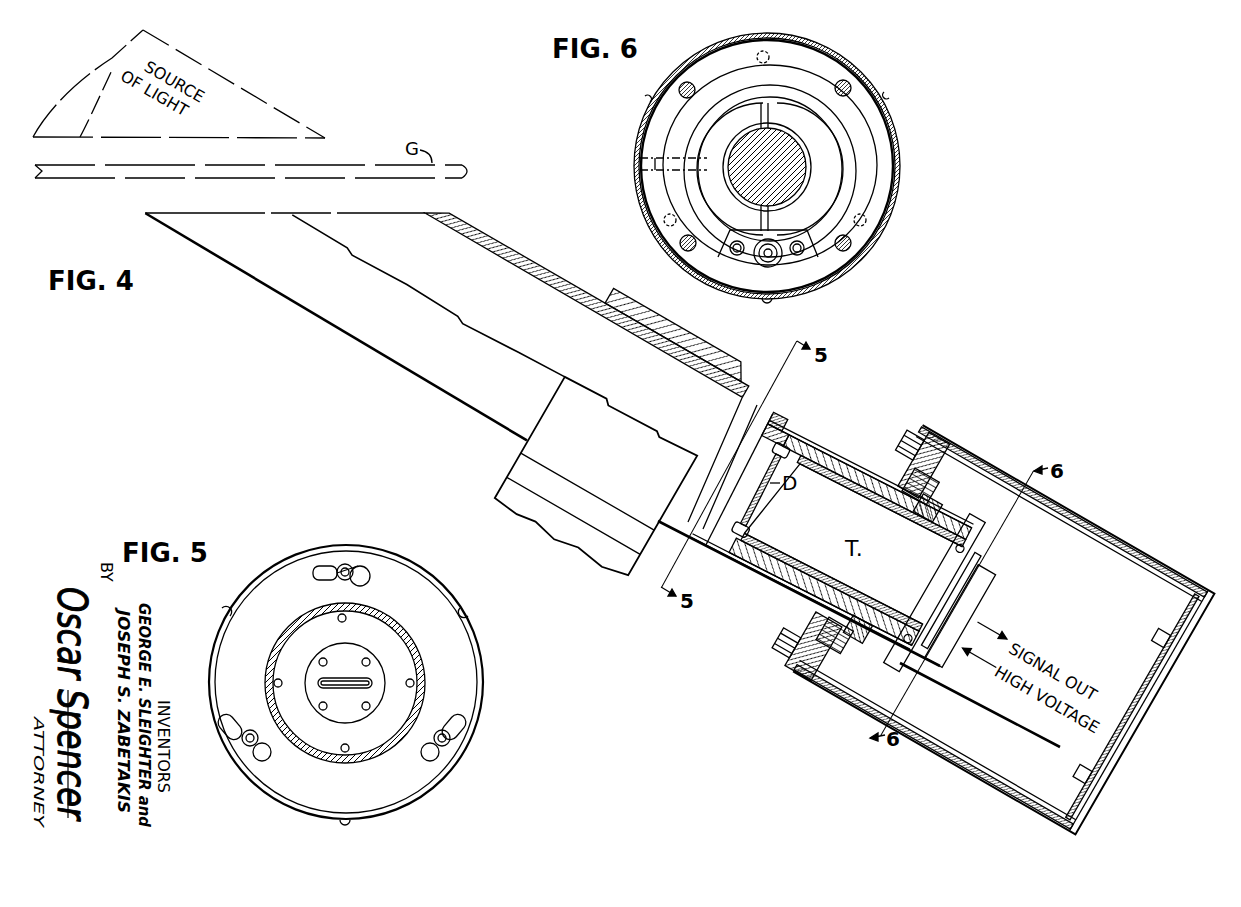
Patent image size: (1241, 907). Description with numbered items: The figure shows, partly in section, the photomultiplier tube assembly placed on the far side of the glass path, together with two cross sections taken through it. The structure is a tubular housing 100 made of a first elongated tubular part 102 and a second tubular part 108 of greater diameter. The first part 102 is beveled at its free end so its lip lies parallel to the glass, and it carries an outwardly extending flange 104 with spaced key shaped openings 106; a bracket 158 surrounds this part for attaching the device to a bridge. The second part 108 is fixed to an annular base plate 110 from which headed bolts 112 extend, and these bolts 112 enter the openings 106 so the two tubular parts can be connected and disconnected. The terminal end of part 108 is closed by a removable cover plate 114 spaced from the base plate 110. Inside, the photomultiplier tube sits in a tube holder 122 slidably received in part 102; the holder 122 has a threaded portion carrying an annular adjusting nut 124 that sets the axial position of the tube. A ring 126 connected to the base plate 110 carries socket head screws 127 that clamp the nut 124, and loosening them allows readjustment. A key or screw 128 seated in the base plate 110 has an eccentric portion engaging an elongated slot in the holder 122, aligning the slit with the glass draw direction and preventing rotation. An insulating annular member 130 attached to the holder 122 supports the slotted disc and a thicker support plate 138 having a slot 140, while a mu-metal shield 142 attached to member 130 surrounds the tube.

In FIG. 4, the tubular housing 100 is at (522, 240).
In FIG. 4, the first elongated tubular part 102 is at (553, 286).
In FIG. 5, the first elongated tubular part 102 is at (404, 642).
In FIG. 4, the outwardly extending flange 104 is at (800, 645).
In FIG. 4, the key shaped openings 106 is at (916, 433).
In FIG. 5, the key shaped openings 106 is at (372, 578).
In FIG. 4, the second tubular part 108 is at (992, 466).
In FIG. 5, the second tubular part 108 is at (478, 668).
In FIG. 6, the second tubular part 108 is at (899, 142).
In FIG. 4, the annular base plate 110 is at (818, 682).
In FIG. 4, the headed bolts 112 is at (900, 442).
In FIG. 5, the headed bolts 112 is at (345, 564).
In FIG. 4, the removable cover plate 114 is at (1172, 615).
In FIG. 4, the tube holder 122 is at (786, 587).
In FIG. 4, the annular adjusting nut 124 is at (937, 508).
In FIG. 4, the ring 126 is at (938, 493).
In FIG. 4, the socket head screws 127 is at (870, 668).
In FIG. 6, the key or screw 128 is at (640, 164).
In FIG. 4, the annular member 130 is at (760, 413).
In FIG. 4, the support plate 138 is at (752, 503).
In FIG. 5, the support plate 138 is at (310, 700).
In FIG. 4, the slot 140 is at (768, 478).
In FIG. 5, the slot 140 is at (345, 688).
In FIG. 4, the shield 142 is at (801, 434).
In FIG. 4, the bracket 158 is at (722, 366).